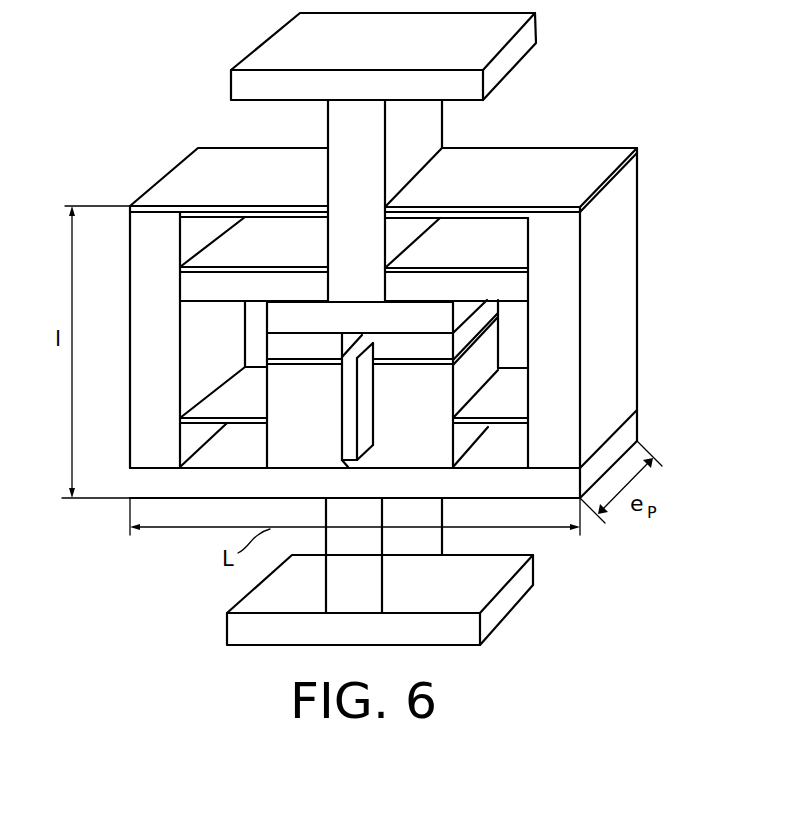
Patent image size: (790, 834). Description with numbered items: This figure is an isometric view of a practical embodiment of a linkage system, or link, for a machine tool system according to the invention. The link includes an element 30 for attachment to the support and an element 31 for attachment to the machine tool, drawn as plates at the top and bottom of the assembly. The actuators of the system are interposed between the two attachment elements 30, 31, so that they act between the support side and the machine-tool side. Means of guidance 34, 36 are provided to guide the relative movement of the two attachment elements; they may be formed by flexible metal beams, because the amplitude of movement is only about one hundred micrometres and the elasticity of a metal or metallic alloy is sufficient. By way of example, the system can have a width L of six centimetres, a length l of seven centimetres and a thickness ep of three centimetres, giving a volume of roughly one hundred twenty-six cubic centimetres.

The element for attachment to the support 30 is at (520, 48).
The element for attachment to the machine tool 31 is at (513, 587).
The means of guidance 34 is at (197, 210).
The means of guidance 36 is at (235, 408).